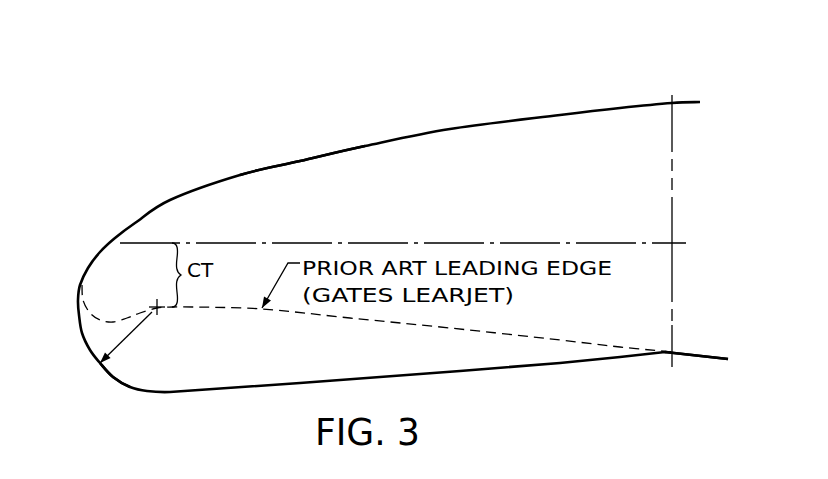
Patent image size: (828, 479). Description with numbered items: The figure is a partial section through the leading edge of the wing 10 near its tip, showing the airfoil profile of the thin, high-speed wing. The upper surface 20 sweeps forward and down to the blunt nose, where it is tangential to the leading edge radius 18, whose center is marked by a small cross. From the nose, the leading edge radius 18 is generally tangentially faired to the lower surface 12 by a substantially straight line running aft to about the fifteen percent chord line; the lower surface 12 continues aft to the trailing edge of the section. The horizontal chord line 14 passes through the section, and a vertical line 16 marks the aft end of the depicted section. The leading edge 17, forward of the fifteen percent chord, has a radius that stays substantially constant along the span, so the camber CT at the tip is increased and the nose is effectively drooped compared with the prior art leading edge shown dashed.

The wing 10 is at (133, 167).
The lower surface 12 is at (697, 357).
The chord line 14 is at (669, 140).
The chord line 16 is at (445, 243).
The leading edge 17 is at (116, 393).
The leading edge radius 18 is at (132, 332).
The upper surface 20 is at (365, 145).